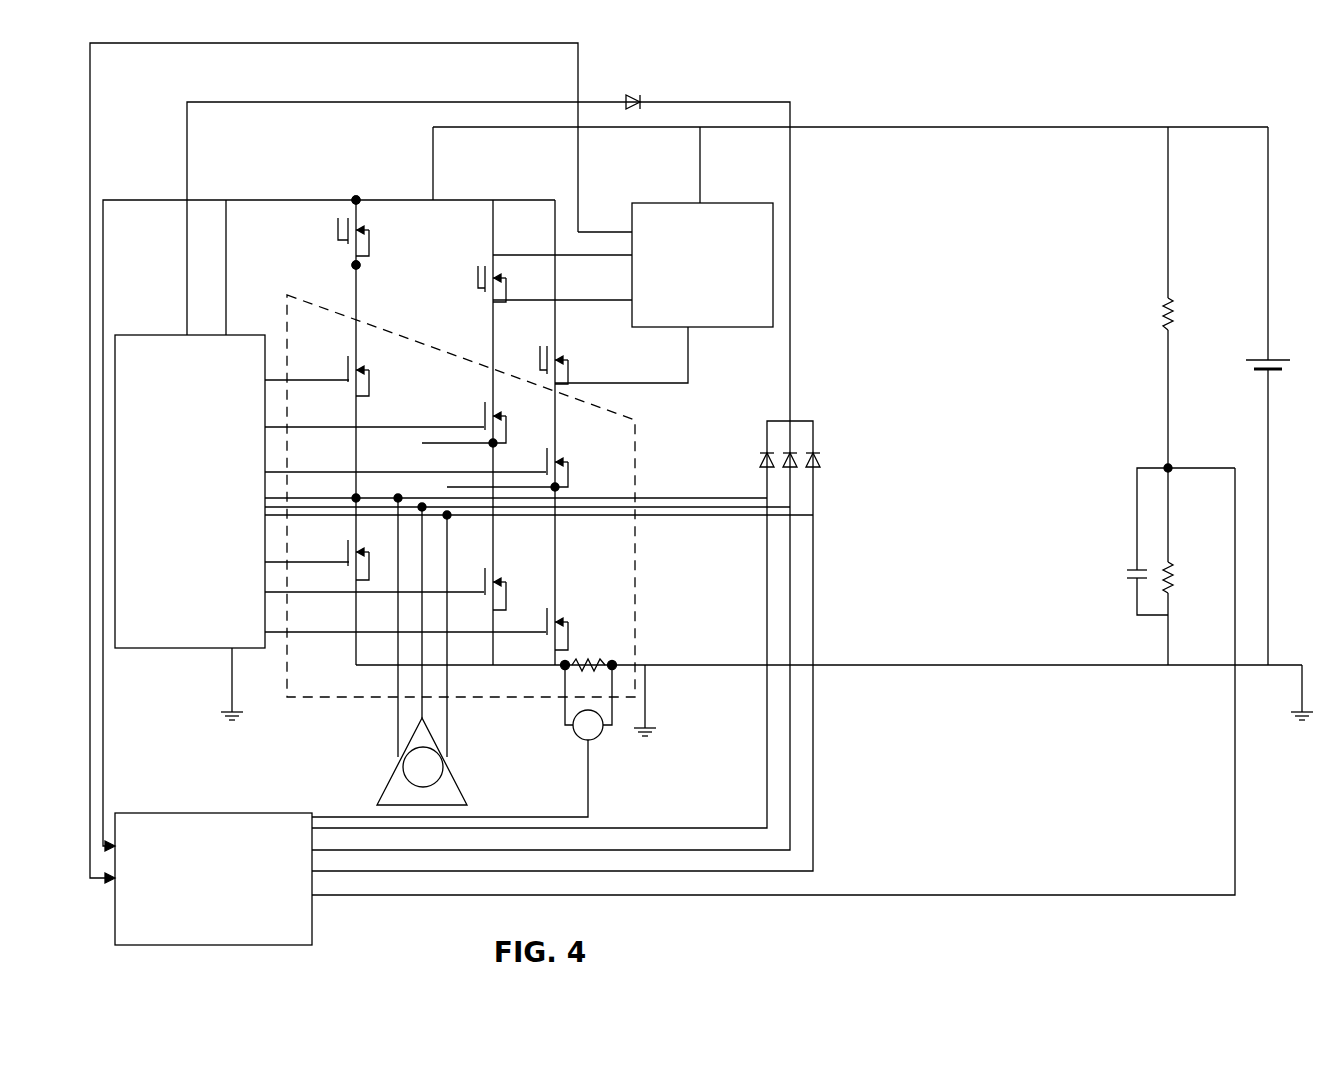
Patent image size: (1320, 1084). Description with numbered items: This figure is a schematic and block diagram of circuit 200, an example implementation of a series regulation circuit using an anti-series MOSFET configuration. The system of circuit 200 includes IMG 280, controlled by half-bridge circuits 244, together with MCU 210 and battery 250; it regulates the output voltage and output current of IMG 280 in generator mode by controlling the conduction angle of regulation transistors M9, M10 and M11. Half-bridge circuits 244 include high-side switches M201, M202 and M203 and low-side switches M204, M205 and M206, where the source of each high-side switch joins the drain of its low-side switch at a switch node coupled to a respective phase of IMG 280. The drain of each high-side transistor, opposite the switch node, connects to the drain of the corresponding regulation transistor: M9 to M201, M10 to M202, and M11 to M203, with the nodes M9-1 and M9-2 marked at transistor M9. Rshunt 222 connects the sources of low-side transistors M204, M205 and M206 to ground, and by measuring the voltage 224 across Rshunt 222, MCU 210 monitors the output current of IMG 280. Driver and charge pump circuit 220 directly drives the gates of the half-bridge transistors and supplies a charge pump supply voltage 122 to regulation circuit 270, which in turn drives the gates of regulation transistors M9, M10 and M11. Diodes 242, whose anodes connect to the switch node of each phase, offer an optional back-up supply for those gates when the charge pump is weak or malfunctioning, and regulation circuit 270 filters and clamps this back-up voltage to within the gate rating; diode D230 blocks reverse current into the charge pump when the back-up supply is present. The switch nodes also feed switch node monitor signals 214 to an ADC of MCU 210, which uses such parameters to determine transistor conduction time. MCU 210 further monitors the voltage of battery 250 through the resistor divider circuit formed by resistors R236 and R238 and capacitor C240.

The circuit 200 is at (1146, 92).
The charge pump supply voltage 122 is at (343, 121).
The diode D230 is at (636, 87).
The regulation circuit 270 is at (689, 300).
The driver and charge pump circuit 220 is at (177, 541).
The half-bridge circuits 244 is at (333, 300).
The regulation transistor M9 is at (381, 237).
The node M9-1 is at (379, 271).
The node M9-2 is at (362, 189).
The regulation transistor M10 is at (515, 284).
The regulation transistor M11 is at (576, 361).
The high-side switch M201 is at (391, 376).
The high-side switch M202 is at (515, 416).
The high-side switch M203 is at (586, 465).
The low-side switch M204 is at (336, 549).
The low-side switch M205 is at (517, 585).
The low-side switch M206 is at (587, 629).
The IMG 280 is at (380, 768).
The Rshunt 222 is at (604, 652).
The voltage 224 is at (605, 748).
The diodes 242 is at (828, 434).
The switch node monitor signals 214 is at (835, 833).
The MCU 210 is at (199, 900).
The resistor R236 is at (1194, 344).
The battery 250 is at (1204, 430).
The resistor R238 is at (1197, 613).
The capacitor C240 is at (1149, 539).